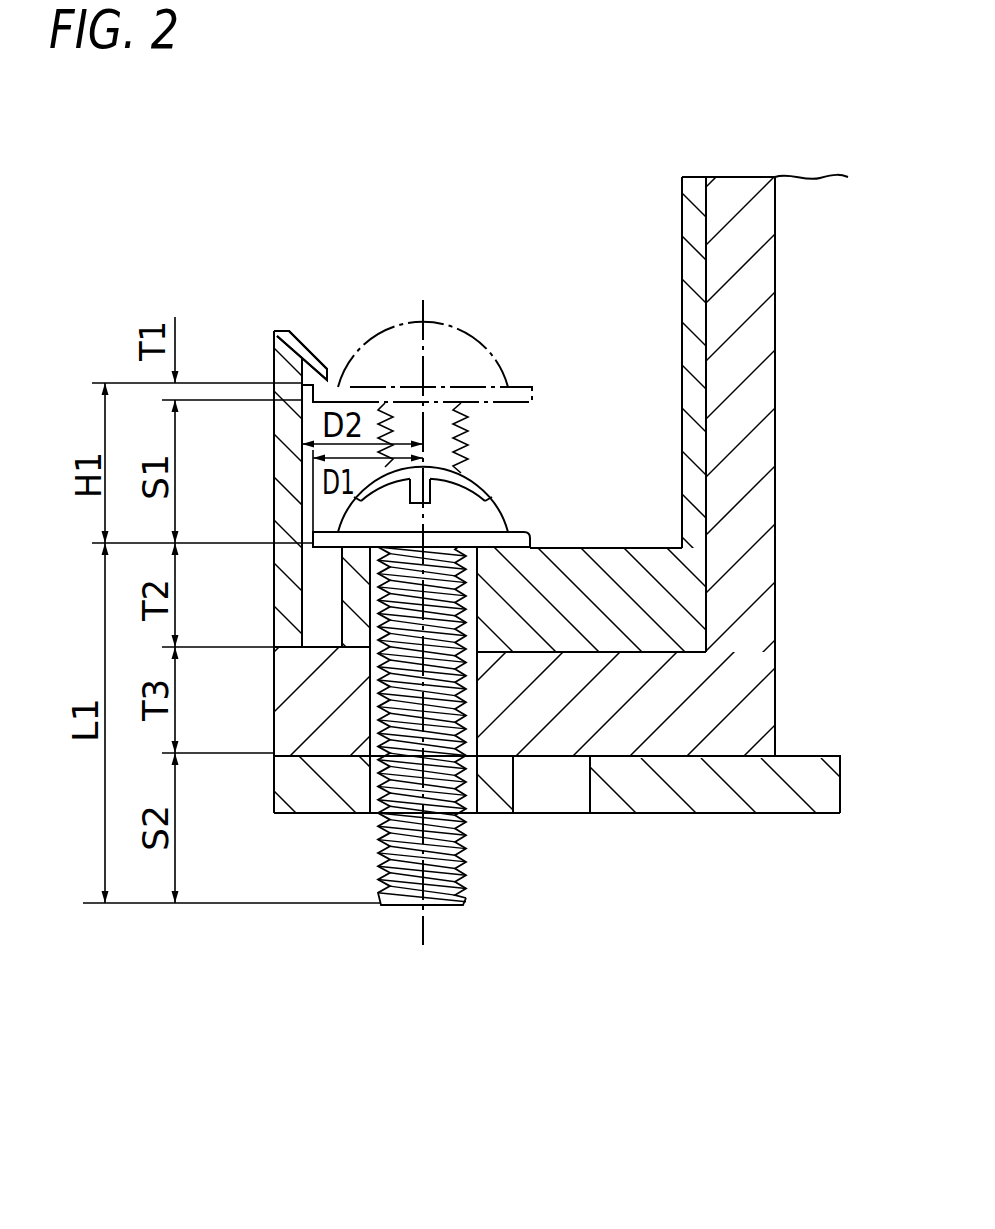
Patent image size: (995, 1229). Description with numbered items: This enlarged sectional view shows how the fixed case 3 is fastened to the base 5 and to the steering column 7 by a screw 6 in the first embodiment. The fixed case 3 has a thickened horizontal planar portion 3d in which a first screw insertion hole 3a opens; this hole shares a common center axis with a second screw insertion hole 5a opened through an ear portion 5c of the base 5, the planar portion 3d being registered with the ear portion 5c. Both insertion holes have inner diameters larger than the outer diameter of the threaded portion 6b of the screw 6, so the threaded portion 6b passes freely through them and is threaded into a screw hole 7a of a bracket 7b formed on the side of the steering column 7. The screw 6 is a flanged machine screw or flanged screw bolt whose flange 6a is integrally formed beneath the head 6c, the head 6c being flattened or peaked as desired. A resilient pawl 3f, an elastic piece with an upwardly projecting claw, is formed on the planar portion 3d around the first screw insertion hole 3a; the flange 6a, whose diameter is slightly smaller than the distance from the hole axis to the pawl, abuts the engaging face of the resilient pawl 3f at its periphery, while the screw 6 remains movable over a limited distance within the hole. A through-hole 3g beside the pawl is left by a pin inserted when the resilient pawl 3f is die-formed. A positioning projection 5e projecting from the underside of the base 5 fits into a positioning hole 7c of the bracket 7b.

The fixed case 3 is at (680, 215).
The first screw insertion hole 3a is at (485, 608).
The planar portion 3d is at (607, 549).
The resilient pawl 3f is at (299, 355).
The through-hole 3g is at (348, 598).
The base 5 is at (777, 265).
The second screw insertion hole 5a is at (513, 757).
The ear portion 5c is at (608, 652).
The positioning projection 5e is at (560, 798).
The screw 6 is at (403, 318).
The flange 6a is at (522, 385).
The threaded portion 6b is at (380, 865).
The head 6c is at (440, 322).
The steering column 7 is at (758, 815).
The screw hole 7a is at (460, 858).
The bracket 7b is at (667, 752).
The positioning hole 7c is at (581, 787).